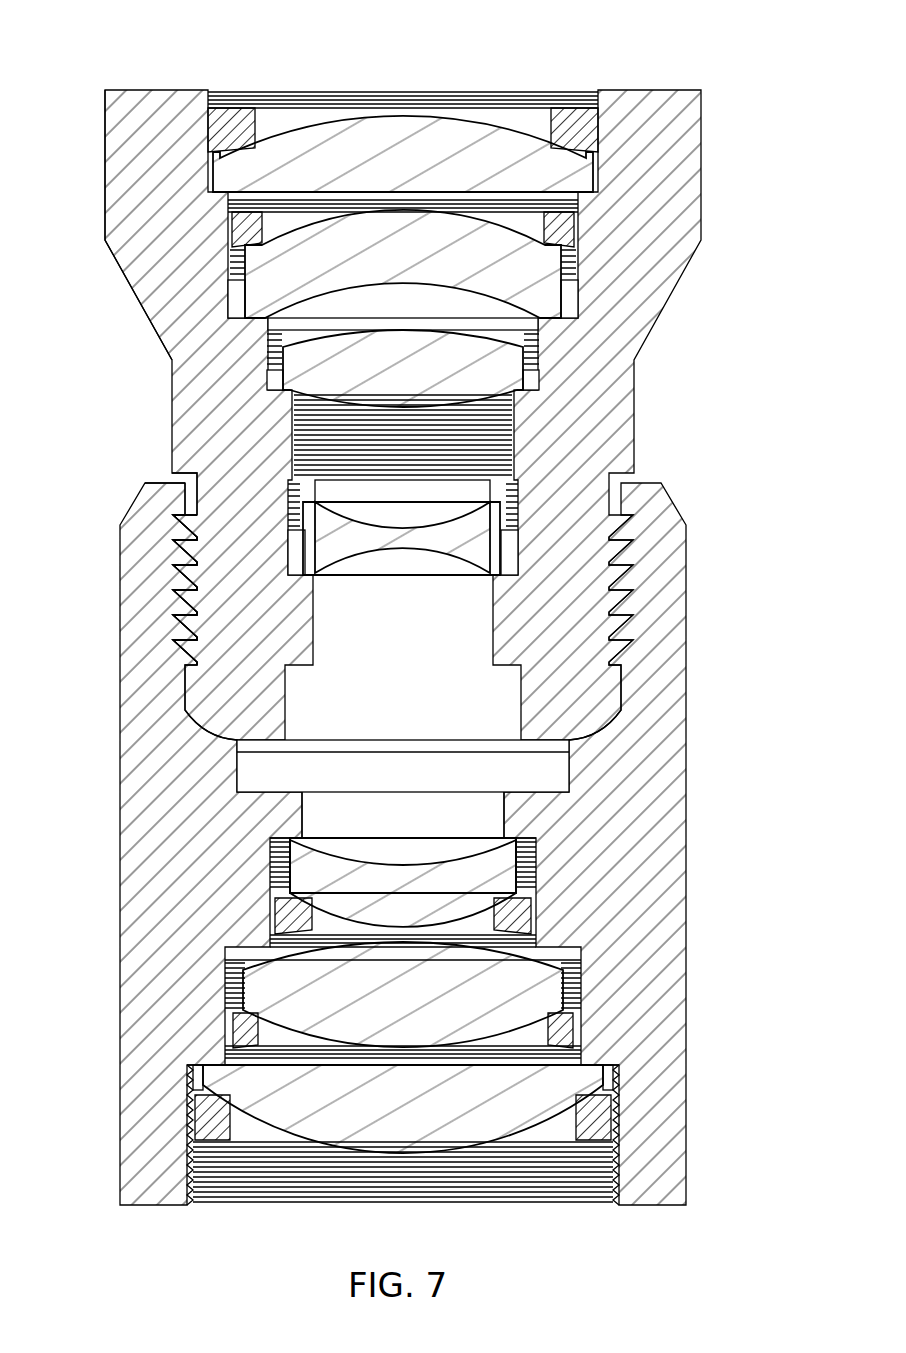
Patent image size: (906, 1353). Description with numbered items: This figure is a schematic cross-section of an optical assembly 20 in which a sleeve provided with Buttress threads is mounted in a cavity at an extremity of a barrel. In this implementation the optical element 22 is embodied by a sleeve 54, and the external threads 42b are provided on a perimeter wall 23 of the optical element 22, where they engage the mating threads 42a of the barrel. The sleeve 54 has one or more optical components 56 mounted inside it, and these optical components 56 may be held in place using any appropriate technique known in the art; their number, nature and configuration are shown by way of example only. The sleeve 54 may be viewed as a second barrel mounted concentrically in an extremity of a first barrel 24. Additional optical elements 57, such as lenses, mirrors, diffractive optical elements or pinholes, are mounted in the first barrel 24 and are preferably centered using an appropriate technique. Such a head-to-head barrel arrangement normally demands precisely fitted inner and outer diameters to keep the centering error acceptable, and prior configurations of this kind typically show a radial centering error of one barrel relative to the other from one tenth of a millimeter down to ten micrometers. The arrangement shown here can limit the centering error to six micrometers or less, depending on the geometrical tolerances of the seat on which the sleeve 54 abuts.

The optical assembly 20 is at (775, 104).
The optical element 22 is at (151, 80).
The perimeter wall 23 is at (167, 473).
The first barrel 24 is at (686, 782).
The external thread 42a is at (180, 573).
The external threads 42b is at (180, 590).
The sleeve 54 is at (120, 186).
The optical components 56 is at (482, 140).
The additional optical elements 57 is at (497, 876).